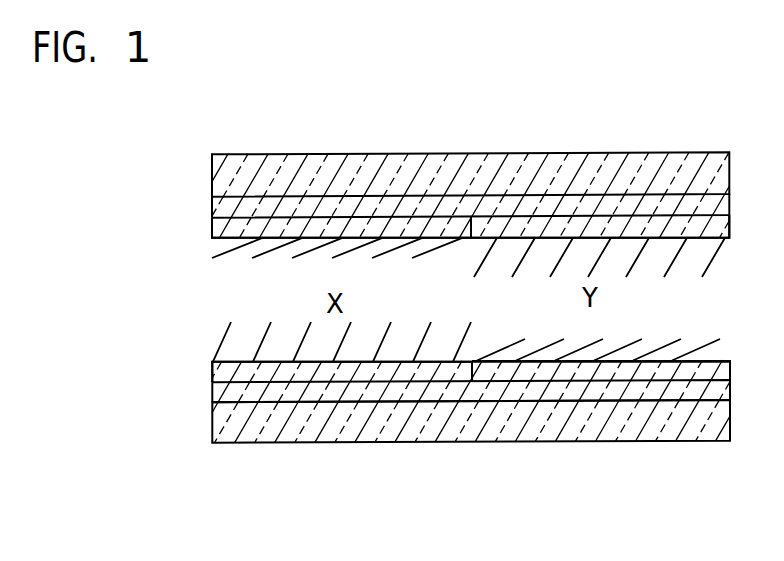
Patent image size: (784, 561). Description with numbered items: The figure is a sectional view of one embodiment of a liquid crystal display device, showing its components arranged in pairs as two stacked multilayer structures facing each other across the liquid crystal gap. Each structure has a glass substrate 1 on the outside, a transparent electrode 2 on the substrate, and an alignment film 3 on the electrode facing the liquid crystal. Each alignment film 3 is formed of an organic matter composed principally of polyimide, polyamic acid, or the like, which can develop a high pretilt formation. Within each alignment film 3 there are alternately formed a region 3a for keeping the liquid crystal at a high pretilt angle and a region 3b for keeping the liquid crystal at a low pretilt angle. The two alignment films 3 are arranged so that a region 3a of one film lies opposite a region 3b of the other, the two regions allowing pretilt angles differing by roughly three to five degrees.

The glass substrate 1 is at (646, 162).
The transparent electrode 2 is at (269, 207).
The alignment film 3 is at (547, 93).
The region for keeping liquid crystal at high pretilt angle 3a is at (540, 225).
The region for keeping liquid crystal at low pretilt angle 3b is at (422, 227).